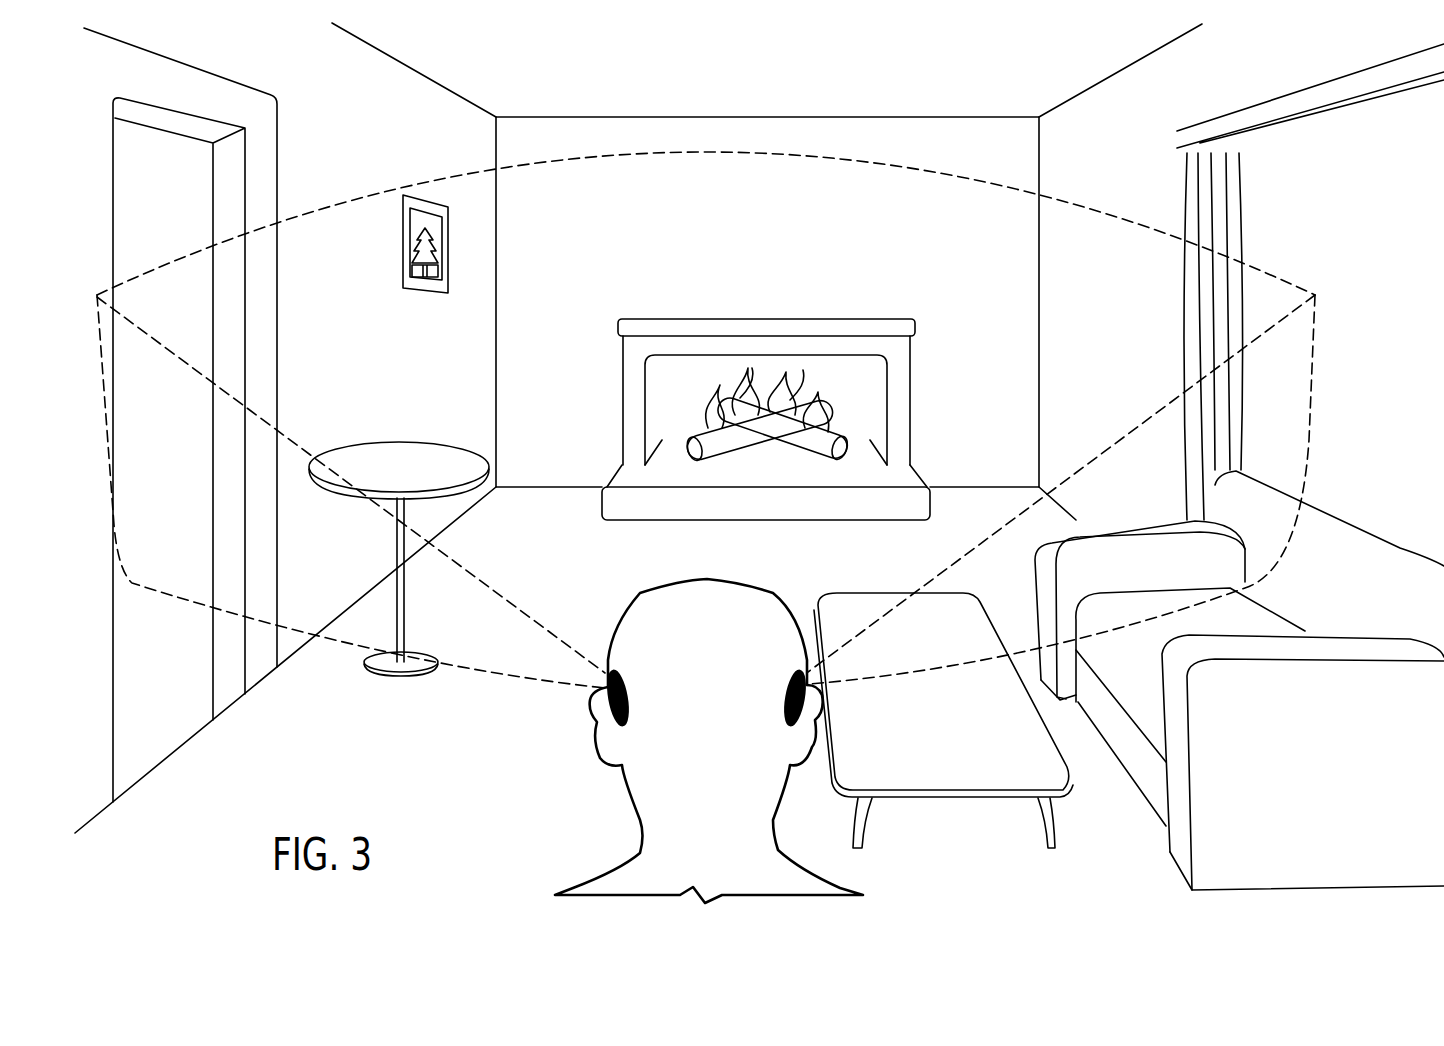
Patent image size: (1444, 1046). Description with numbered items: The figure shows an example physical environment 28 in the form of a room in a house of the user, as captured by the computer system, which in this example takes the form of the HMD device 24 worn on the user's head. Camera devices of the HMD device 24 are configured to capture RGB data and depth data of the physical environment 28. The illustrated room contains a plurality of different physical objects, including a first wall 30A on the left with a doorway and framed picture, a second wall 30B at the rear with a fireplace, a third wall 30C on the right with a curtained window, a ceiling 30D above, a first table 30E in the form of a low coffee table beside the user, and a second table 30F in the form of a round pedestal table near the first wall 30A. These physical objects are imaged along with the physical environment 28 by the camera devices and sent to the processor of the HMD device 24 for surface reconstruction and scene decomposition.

The HMD device 24 is at (797, 675).
The physical environment 28 is at (1003, 67).
The first wall 30A is at (330, 337).
The second wall 30B is at (703, 235).
The third wall 30C is at (1100, 322).
The ceiling 30D is at (770, 92).
The first table 30E is at (923, 730).
The second table 30F is at (392, 453).